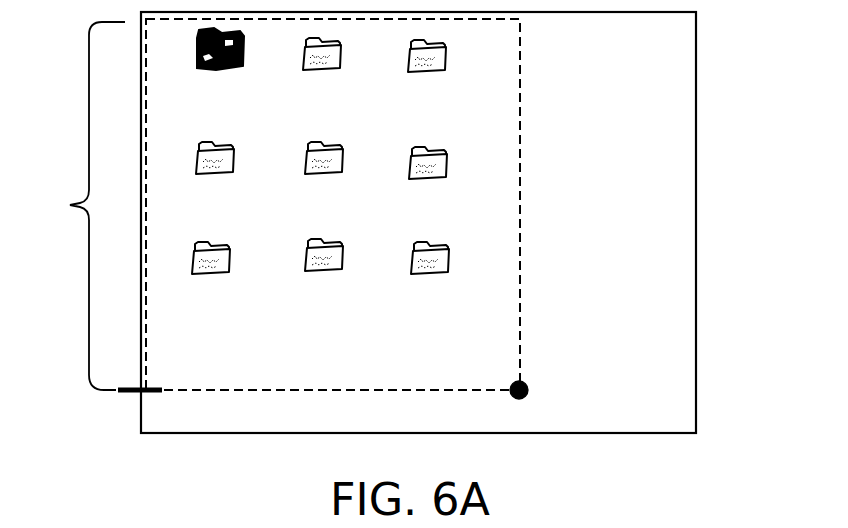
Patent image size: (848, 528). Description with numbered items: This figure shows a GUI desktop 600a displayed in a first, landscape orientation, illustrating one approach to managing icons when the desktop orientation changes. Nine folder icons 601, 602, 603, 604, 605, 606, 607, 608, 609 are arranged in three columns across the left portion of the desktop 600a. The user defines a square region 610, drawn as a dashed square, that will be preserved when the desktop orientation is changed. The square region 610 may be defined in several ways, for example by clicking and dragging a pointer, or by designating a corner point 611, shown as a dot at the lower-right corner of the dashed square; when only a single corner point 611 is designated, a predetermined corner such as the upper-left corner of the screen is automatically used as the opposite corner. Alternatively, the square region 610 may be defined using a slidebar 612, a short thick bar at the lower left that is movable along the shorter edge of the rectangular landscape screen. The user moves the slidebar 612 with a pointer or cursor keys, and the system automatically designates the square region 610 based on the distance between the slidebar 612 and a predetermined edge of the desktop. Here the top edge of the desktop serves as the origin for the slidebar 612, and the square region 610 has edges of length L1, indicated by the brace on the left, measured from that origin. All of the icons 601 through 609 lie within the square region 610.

The display window 600a is at (473, 222).
The icon 601 is at (220, 67).
The icon 602 is at (215, 176).
The icon 603 is at (211, 277).
The icon 604 is at (323, 72).
The icon 605 is at (324, 176).
The icon 606 is at (324, 273).
The icon 607 is at (427, 74).
The icon 608 is at (429, 180).
The icon 609 is at (430, 277).
The square region 610 is at (382, 204).
The corner point 611 is at (568, 398).
The slidebar 612 is at (103, 415).
The edge length L1 is at (81, 206).